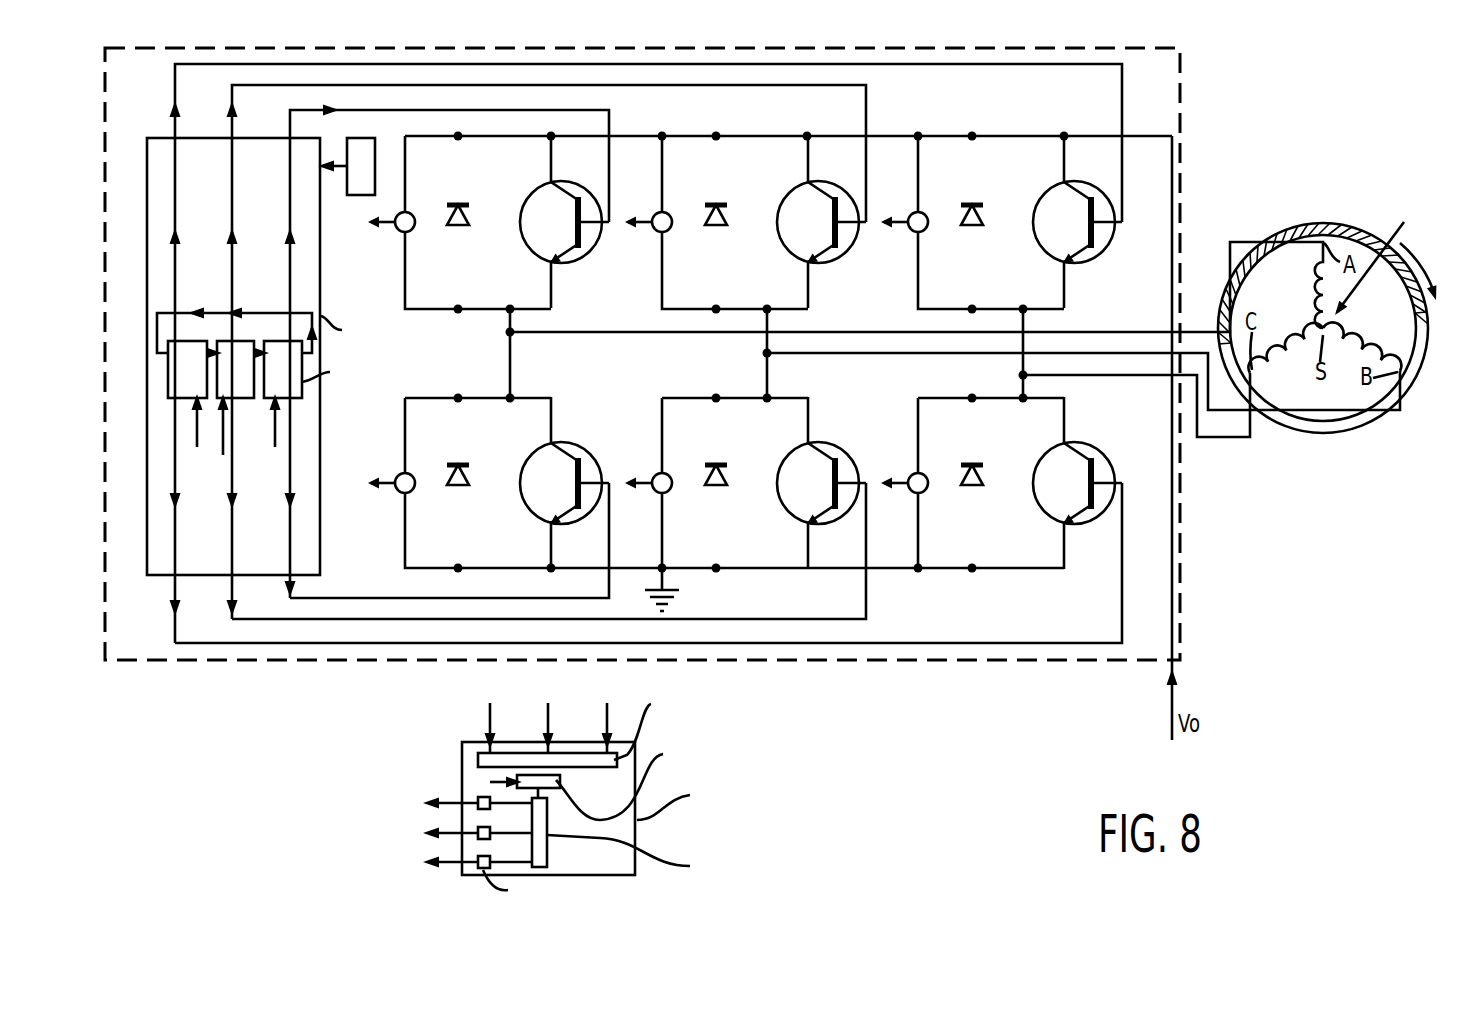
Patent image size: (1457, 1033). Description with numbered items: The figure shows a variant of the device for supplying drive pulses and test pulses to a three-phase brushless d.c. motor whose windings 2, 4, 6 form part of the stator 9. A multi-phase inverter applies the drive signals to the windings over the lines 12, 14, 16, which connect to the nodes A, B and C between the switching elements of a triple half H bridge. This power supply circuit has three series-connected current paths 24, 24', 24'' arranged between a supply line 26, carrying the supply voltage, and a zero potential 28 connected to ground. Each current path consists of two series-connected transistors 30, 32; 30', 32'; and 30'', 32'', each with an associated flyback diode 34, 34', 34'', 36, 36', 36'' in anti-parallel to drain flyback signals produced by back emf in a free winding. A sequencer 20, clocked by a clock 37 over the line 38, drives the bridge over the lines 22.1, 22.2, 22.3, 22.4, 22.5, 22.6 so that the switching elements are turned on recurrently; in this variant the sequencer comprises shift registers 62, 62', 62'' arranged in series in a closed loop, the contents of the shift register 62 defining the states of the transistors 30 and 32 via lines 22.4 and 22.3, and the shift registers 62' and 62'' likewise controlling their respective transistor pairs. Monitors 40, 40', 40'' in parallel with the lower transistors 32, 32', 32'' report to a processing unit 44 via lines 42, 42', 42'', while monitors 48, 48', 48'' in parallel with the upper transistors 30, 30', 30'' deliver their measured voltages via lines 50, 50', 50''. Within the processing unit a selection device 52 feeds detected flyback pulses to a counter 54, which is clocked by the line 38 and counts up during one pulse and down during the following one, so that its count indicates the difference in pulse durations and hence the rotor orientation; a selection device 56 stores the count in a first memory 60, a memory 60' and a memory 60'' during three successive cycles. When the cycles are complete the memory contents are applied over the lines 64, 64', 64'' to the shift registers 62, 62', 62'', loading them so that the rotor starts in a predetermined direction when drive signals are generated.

The winding 2 is at (1310, 276).
The winding 4 is at (1369, 337).
The winding 6 is at (1290, 337).
The stator 9 is at (1385, 253).
The line 12 is at (581, 334).
The line 14 is at (857, 354).
The line 16 is at (1099, 377).
The sequencer 20 is at (299, 356).
The line 22.1 is at (1122, 96).
The line 22.2 is at (867, 100).
The line 22.3 is at (612, 118).
The line 22.4 is at (405, 598).
The line 22.5 is at (870, 612).
The line 22.6 is at (962, 648).
The current path 24 is at (510, 354).
The current path 24' is at (768, 354).
The current path 24'' is at (1025, 354).
The supply line 26 is at (756, 136).
The zero potential 28 is at (757, 572).
The transistor 30 is at (559, 222).
The transistor 30' is at (815, 222).
The transistor 30'' is at (1072, 222).
The transistor 32 is at (554, 483).
The transistor 32' is at (811, 483).
The transistor 32'' is at (1066, 483).
The flyback diode 34 is at (452, 248).
The flyback diode 34' is at (708, 248).
The flyback diode 34'' is at (964, 248).
The flyback diode 36 is at (451, 508).
The flyback diode 36' is at (707, 508).
The flyback diode 36'' is at (961, 508).
The clock 37 is at (350, 196).
The line 38 is at (420, 462).
The monitor 40 is at (396, 516).
The monitor 40' is at (652, 516).
The monitor 40'' is at (908, 516).
The line 42 is at (424, 579).
The line 42' is at (594, 577).
The line 42'' is at (752, 577).
The processing unit 44 is at (637, 838).
The monitor 48 is at (397, 254).
The monitor 48' is at (654, 254).
The monitor 48'' is at (910, 254).
The line 50 is at (369, 260).
The line 50' is at (626, 260).
The line 50'' is at (881, 260).
The selection device 52 is at (613, 767).
The counter 54 is at (560, 780).
The selection device 56 is at (548, 857).
The first memory 60 is at (482, 771).
The memory 60' is at (505, 823).
The memory 60'' is at (505, 851).
The shift register 62 is at (366, 369).
The shift register 62' is at (230, 369).
The shift register 62'' is at (187, 369).
The line 64 is at (371, 601).
The line 64' is at (345, 616).
The line 64'' is at (330, 640).